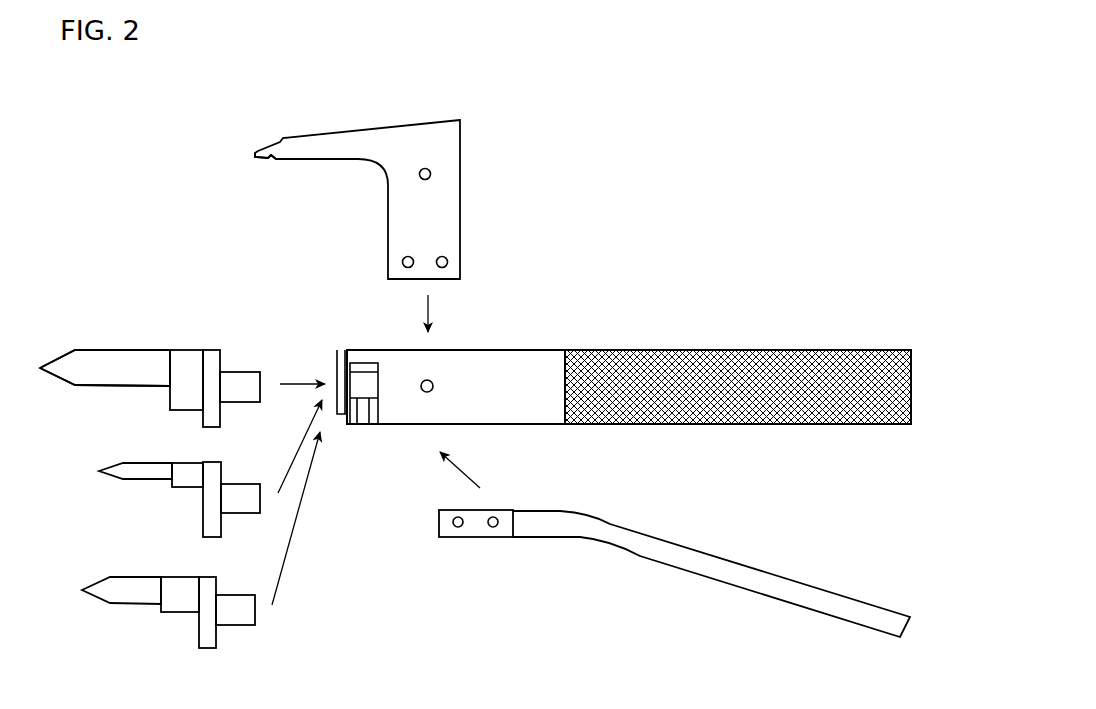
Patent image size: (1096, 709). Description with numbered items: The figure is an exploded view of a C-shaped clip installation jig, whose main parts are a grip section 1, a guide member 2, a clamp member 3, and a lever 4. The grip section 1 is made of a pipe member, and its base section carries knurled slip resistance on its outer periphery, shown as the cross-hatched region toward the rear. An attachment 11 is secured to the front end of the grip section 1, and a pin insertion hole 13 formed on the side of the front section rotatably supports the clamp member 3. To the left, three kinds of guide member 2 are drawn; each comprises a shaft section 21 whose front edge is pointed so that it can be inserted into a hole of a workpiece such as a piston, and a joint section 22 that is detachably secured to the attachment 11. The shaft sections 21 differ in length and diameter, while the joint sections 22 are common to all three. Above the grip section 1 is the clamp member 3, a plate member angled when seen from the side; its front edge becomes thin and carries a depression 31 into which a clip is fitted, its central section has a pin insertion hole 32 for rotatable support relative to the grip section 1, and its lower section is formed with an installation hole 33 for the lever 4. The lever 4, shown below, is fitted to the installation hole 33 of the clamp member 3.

The grip section 1 is at (660, 362).
The attachment 11 is at (364, 383).
The pin insertion hole 13 is at (433, 386).
The guide member 2 is at (85, 353).
The shaft section 21 is at (108, 378).
The joint section 22 is at (247, 377).
The clamp member 3 is at (412, 120).
The depression 31 is at (270, 160).
The pin insertion hole 32 is at (431, 174).
The installation hole 33 is at (403, 262).
The lever 4 is at (682, 555).